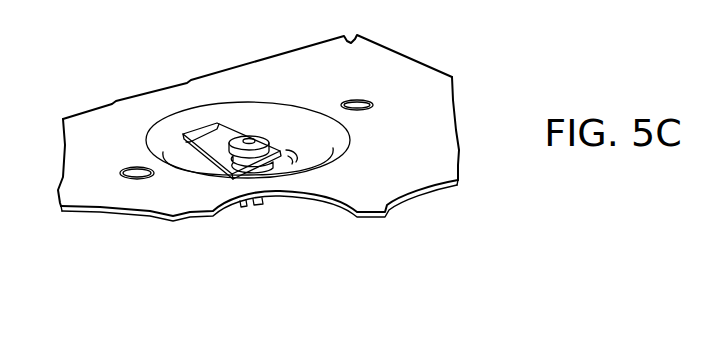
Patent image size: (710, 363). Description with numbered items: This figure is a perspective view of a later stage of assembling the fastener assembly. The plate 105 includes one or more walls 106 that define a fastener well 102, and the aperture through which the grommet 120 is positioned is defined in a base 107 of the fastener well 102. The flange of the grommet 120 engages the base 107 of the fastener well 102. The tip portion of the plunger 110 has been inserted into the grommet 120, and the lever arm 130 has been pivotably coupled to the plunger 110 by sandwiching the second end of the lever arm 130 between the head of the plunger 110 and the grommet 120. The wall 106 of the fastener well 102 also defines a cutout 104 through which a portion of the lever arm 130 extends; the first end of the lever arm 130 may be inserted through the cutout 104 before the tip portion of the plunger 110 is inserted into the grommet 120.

The fastener well 102 is at (281, 117).
The cutout 104 is at (213, 127).
The plate 105 is at (391, 148).
The wall 106 is at (321, 127).
The base 107 is at (289, 163).
The plunger 110 is at (258, 142).
The grommet 120 is at (241, 213).
The lever arm 130 is at (213, 152).